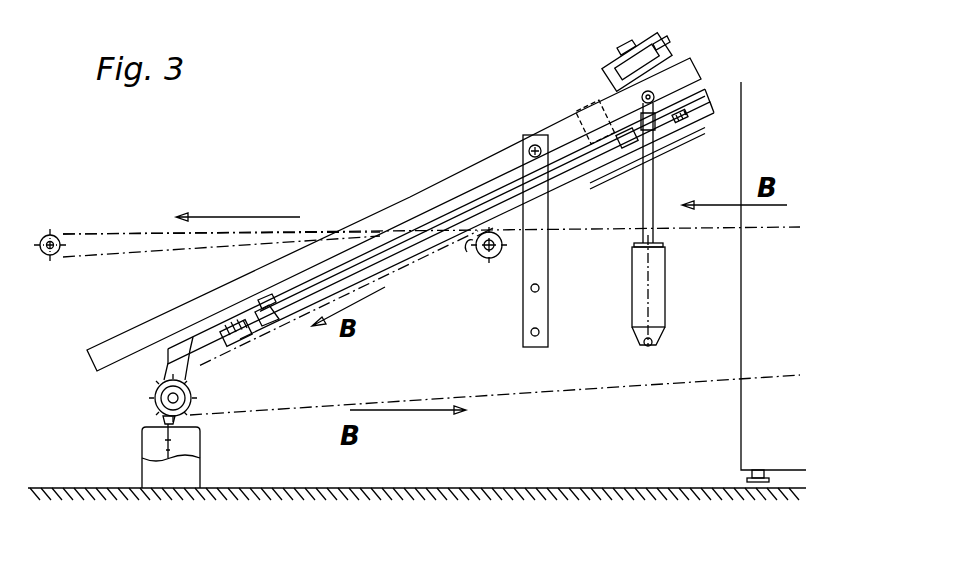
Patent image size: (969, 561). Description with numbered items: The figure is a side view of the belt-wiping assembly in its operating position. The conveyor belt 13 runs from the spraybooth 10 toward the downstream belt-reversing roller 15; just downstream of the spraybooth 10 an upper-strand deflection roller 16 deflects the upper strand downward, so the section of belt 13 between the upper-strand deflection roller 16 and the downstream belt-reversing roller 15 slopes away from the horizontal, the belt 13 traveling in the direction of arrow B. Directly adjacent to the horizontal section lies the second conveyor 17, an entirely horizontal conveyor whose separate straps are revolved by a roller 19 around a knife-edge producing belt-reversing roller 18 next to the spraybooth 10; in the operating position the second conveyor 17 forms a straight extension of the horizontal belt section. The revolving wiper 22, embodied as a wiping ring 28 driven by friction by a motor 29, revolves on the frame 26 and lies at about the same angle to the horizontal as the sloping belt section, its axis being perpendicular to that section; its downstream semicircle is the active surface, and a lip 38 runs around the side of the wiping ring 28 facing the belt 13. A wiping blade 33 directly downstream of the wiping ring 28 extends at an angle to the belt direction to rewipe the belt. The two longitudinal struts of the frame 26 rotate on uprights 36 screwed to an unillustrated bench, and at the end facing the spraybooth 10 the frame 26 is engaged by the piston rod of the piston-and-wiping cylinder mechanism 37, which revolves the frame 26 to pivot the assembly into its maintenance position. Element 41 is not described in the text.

The spraybooth 10 is at (733, 432).
The belt 13 is at (582, 226).
The downstream belt-reversing roller 15 is at (154, 399).
The upper-strand deflection roller 16 is at (494, 260).
The second conveyor 17 is at (101, 226).
The knife-edge producing belt-reversing roller 18 is at (488, 230).
The roller 19 is at (50, 234).
The wiper 22 is at (302, 281).
The frame 26 is at (378, 208).
The wiping ring 28 is at (326, 290).
The motor 29 is at (640, 37).
The wiping blade 33 is at (186, 366).
The uprights 36 is at (535, 263).
The piston-and-wiping cylinder mechanism 37 is at (662, 292).
The lip 38 is at (252, 336).
The roller holder 41 is at (470, 252).